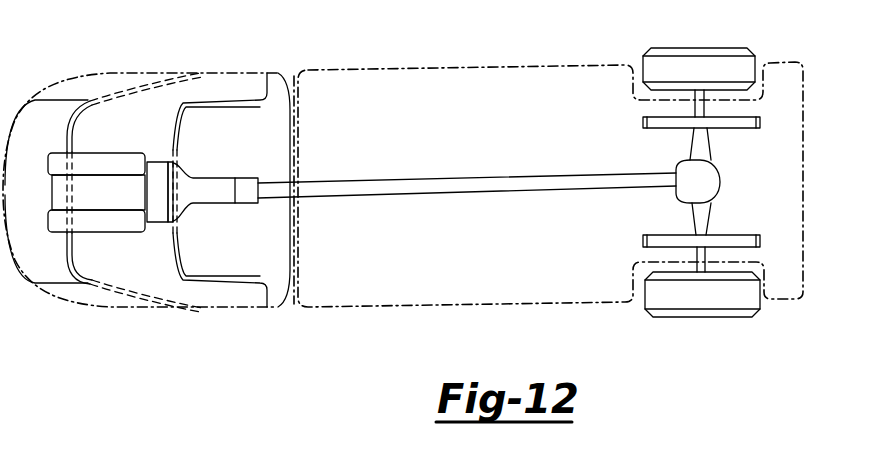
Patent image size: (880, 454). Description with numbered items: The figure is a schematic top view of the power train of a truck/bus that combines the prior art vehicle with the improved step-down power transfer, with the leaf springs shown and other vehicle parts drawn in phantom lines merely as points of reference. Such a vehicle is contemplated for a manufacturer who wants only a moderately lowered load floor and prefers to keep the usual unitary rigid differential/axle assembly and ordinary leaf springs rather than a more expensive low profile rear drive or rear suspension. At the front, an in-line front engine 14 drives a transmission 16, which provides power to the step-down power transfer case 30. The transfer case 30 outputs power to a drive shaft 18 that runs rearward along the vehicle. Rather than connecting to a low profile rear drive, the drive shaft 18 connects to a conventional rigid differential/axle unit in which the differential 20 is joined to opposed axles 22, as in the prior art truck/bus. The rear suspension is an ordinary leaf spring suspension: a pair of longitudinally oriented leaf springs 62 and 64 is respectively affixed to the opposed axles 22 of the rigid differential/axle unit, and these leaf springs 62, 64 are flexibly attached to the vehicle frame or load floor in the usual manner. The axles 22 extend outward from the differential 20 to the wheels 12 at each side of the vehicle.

The wheel 12 is at (680, 50).
The in-line front engine 14 is at (57, 158).
The transmission 16 is at (181, 176).
The drive shaft 18 is at (331, 182).
The differential 20 is at (714, 189).
The axles 22 is at (696, 150).
The step-down power transfer case 30 is at (256, 181).
The leaf spring 62 is at (643, 246).
The leaf spring 64 is at (643, 123).